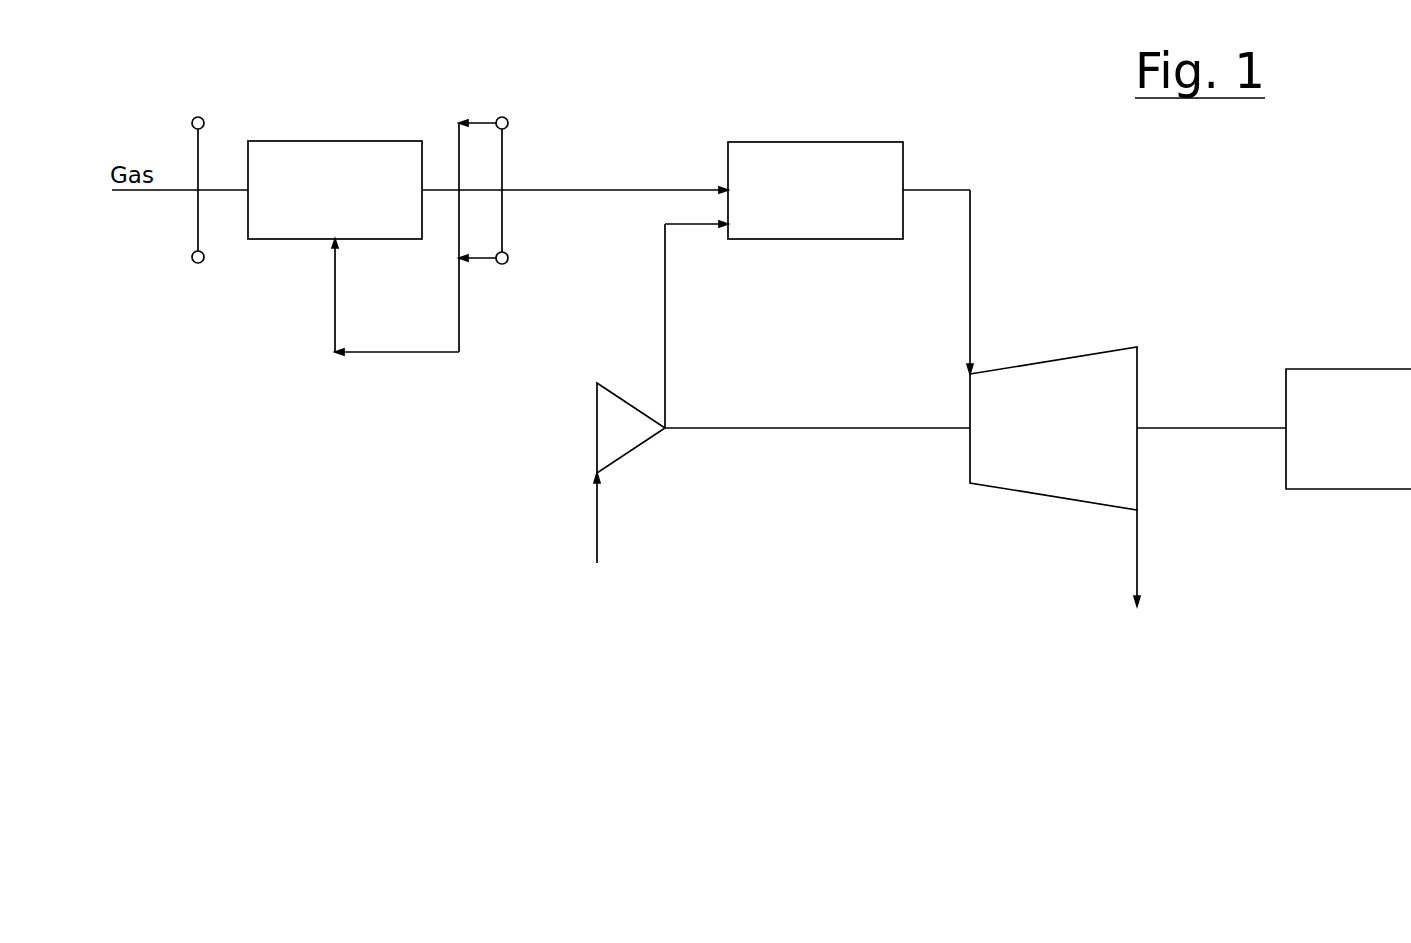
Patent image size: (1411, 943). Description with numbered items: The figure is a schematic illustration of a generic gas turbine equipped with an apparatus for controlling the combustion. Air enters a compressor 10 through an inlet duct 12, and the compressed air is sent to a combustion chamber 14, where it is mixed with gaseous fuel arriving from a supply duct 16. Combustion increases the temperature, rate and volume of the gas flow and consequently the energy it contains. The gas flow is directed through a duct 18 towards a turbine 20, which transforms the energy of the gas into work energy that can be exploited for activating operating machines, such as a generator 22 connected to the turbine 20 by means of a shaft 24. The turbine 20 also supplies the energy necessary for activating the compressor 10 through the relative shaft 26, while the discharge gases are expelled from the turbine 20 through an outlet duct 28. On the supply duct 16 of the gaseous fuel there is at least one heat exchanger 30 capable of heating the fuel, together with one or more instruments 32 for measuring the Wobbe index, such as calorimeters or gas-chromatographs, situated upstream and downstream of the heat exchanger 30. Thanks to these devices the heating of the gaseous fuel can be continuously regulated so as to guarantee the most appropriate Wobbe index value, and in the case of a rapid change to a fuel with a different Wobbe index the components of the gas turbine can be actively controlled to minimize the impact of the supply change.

The compressor 10 is at (602, 439).
The inlet duct 12 is at (597, 520).
The combustion chamber 14 is at (830, 197).
The supply duct 16 is at (557, 190).
The duct 18 is at (970, 257).
The turbine 20 is at (1039, 439).
The generator 22 is at (1339, 437).
The shaft 24 is at (1200, 430).
The shaft 26 is at (800, 430).
The outlet duct 28 is at (1137, 562).
The heat exchanger 30 is at (351, 198).
The instrument for measuring the Wobbe index 32 is at (199, 117).